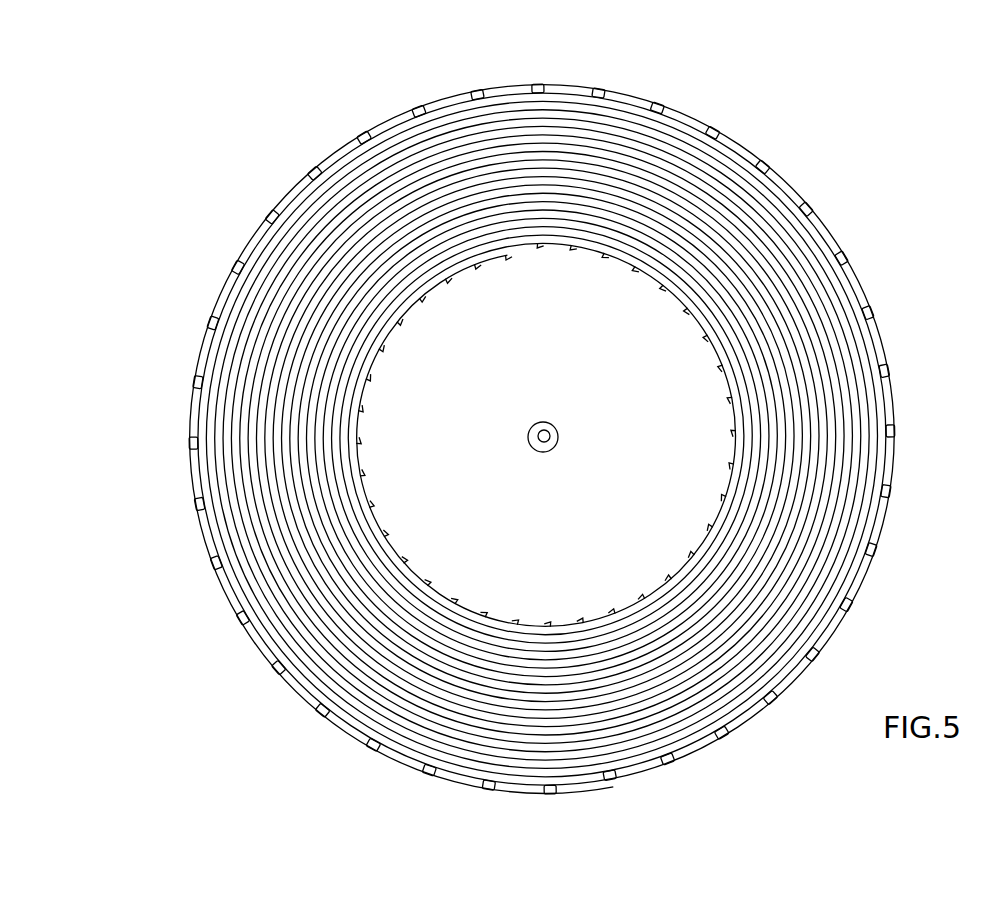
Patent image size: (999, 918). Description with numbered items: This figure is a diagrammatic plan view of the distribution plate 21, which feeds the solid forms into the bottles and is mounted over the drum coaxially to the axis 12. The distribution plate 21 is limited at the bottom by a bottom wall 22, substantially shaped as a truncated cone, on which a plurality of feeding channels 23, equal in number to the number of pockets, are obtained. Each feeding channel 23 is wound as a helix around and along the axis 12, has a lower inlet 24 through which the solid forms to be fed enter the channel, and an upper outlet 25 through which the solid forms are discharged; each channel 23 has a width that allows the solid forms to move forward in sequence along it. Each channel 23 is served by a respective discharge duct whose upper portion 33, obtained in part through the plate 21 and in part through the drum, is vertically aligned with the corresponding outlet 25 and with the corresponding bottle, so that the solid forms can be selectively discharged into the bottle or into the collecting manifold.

The axis 12 is at (539, 448).
The distribution plate 21 is at (513, 419).
The bottom wall 22 is at (724, 210).
The feeding channel 23 is at (542, 439).
The lower inlet 24 is at (422, 298).
The upper outlet 25 is at (432, 112).
The upper portion 33 is at (233, 268).